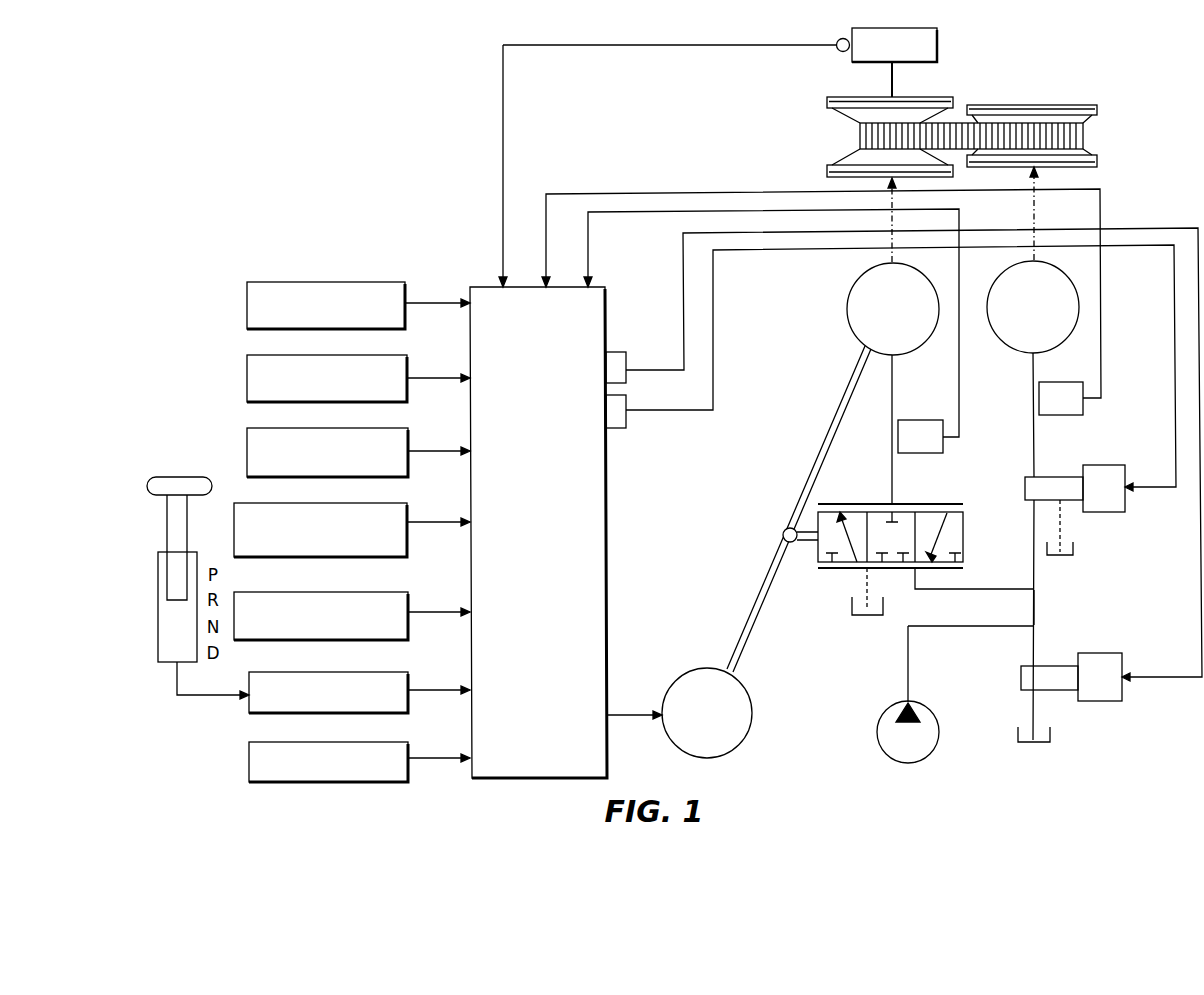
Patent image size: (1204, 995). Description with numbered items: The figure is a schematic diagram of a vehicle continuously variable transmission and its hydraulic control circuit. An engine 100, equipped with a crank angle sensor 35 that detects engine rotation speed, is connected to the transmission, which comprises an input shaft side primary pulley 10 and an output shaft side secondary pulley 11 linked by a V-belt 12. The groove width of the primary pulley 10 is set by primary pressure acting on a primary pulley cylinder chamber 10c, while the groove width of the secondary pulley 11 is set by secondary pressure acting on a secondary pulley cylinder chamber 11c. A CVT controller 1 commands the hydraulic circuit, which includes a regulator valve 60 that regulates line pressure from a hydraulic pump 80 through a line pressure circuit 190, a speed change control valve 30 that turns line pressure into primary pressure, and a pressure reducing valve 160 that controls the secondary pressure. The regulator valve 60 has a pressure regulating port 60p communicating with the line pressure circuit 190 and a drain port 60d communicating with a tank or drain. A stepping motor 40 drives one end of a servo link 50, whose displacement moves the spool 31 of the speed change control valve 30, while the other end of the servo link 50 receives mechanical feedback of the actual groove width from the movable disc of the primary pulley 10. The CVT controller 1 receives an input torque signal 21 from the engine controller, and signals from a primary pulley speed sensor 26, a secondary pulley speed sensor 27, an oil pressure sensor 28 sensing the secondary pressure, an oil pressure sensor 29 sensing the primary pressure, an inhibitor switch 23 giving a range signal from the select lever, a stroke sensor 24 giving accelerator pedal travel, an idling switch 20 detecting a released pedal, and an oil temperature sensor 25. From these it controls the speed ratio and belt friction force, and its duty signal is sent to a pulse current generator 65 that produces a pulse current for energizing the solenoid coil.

The CVT controller 1 is at (785, 411).
The engine 100 is at (940, 45).
The crank angle sensor 35 is at (840, 51).
The primary pulley 10 is at (857, 97).
The secondary pulley 11 is at (990, 105).
The V-belt 12 is at (1083, 134).
The primary pulley cylinder chamber 10c is at (850, 305).
The secondary pulley cylinder chamber 11c is at (993, 330).
The pulse current generator 65 is at (622, 352).
The oil pressure sensor 28 is at (1062, 415).
The oil pressure sensor 29 is at (918, 453).
The speed change control valve 30 is at (911, 570).
The spool 31 is at (963, 530).
The pressure reducing valve 160 is at (1071, 506).
The line pressure circuit 190 is at (1032, 607).
The regulator valve 60 is at (1015, 665).
The pressure regulating port 60p is at (1022, 666).
The drain port 60d is at (1026, 690).
The servo link 50 is at (767, 588).
The stepping motor 40 is at (745, 740).
The hydraulic pump 80 is at (935, 746).
The oil temperature sensor 25 is at (292, 282).
The input torque signal 21 is at (287, 355).
The primary pulley speed sensor 26 is at (287, 428).
The secondary pulley speed sensor 27 is at (285, 503).
The stroke sensor 24 is at (285, 592).
The inhibitor switch 23 is at (278, 672).
The idling switch 20 is at (275, 742).